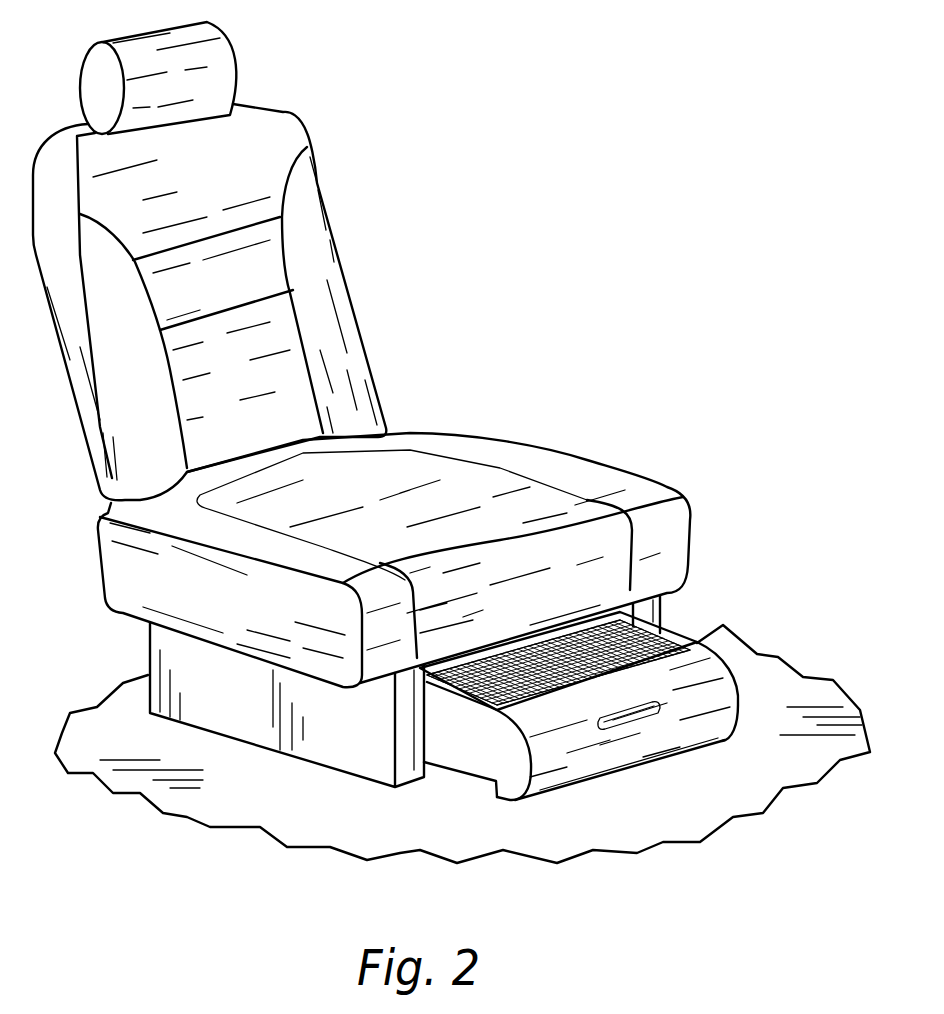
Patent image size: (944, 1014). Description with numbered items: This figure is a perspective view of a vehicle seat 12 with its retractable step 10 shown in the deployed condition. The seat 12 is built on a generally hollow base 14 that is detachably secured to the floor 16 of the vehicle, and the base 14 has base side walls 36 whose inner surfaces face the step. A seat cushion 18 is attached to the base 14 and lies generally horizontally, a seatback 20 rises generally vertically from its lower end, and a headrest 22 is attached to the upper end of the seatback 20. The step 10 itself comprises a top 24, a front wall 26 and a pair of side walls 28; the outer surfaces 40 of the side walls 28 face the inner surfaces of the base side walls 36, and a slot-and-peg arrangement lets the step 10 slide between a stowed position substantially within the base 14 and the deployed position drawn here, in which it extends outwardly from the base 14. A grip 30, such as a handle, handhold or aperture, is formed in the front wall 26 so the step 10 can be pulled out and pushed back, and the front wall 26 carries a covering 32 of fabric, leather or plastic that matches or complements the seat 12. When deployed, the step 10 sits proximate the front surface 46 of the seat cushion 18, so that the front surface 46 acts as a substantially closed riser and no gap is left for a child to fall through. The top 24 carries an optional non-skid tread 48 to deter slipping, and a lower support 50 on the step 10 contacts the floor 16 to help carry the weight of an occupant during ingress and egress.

The retractable step 10 is at (434, 443).
The vehicle seat 12 is at (361, 345).
The base 14 is at (421, 679).
The floor 16 is at (228, 808).
The seat cushion 18 is at (394, 540).
The seatback 20 is at (313, 303).
The headrest 22 is at (220, 52).
The top 24 is at (618, 715).
The front wall 26 is at (629, 757).
The side walls 28 is at (483, 760).
The grip 30 is at (635, 722).
The covering 32 is at (693, 700).
The base side walls 36 is at (328, 733).
The outer surfaces 40 is at (489, 738).
The front surface 46 is at (523, 590).
The non-skid tread 48 is at (677, 637).
The lower support 50 is at (508, 800).